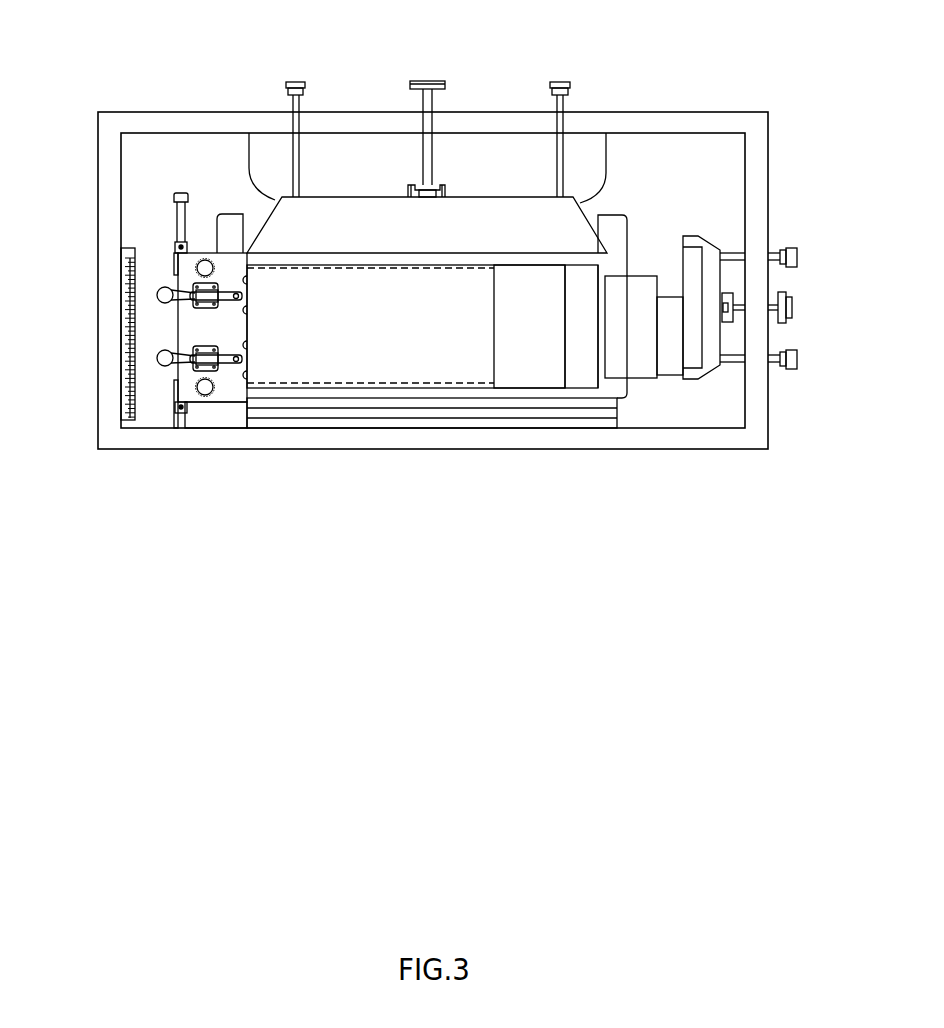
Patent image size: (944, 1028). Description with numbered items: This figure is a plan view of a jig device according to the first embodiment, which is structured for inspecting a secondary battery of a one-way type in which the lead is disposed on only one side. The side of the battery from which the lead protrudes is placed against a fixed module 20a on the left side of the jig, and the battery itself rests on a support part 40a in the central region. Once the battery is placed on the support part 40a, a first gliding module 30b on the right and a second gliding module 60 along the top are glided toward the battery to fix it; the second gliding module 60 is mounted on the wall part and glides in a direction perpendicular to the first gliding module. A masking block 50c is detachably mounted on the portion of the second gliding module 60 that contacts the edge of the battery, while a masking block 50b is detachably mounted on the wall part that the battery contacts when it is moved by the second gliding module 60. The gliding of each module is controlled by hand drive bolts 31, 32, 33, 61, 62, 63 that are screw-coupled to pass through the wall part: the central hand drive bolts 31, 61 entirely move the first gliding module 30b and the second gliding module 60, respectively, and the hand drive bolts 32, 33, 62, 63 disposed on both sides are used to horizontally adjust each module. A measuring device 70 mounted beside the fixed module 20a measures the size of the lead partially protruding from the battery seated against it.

The fixed module 20a is at (190, 265).
The first gliding module 30b is at (707, 257).
The hand drive bolt 31 is at (792, 308).
The hand drive bolt 32 is at (797, 360).
The hand drive bolt 33 is at (797, 258).
The support part 40a is at (523, 368).
The masking block 50b is at (378, 392).
The masking block 50c is at (355, 260).
The second gliding module 60 is at (493, 227).
The hand drive bolt 61 is at (427, 80).
The hand drive bolt 62 is at (295, 81).
The hand drive bolt 63 is at (560, 81).
The measuring device 70 is at (127, 387).